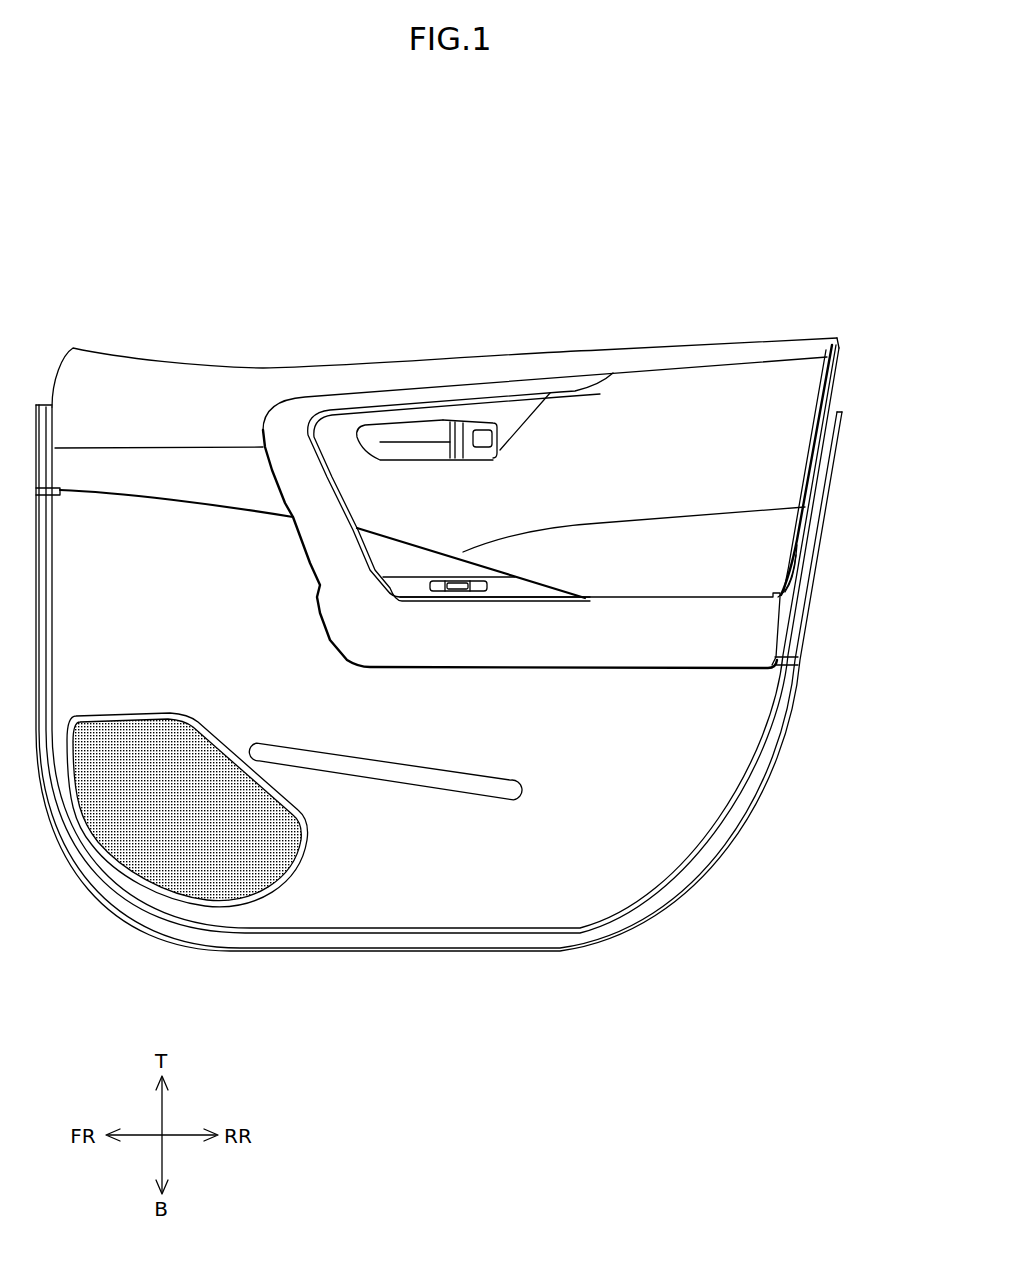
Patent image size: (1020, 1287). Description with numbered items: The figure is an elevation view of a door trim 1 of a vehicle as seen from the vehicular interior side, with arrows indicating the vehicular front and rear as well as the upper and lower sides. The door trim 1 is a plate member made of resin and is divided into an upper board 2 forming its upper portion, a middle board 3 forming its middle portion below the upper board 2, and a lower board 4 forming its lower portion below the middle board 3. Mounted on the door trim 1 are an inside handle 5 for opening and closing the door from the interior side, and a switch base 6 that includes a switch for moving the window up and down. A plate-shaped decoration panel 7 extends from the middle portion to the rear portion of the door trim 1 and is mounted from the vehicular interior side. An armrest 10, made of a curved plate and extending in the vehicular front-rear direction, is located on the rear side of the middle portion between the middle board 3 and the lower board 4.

The door trim 1 is at (243, 260).
The upper board 2 is at (813, 346).
The middle board 3 is at (793, 438).
The lower board 4 is at (735, 737).
The inside handle 5 is at (443, 445).
The switch base 6 is at (450, 583).
The decoration panel 7 is at (765, 636).
The armrest 10 is at (778, 547).